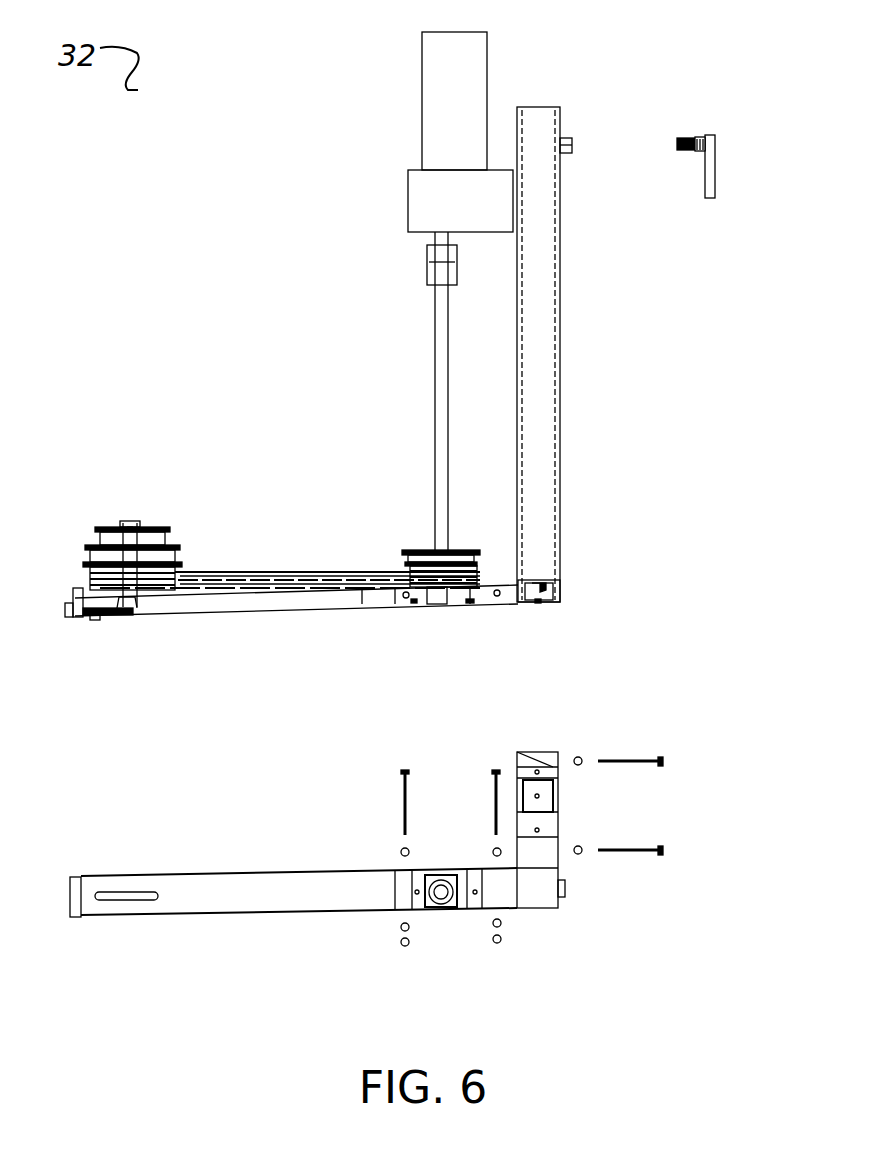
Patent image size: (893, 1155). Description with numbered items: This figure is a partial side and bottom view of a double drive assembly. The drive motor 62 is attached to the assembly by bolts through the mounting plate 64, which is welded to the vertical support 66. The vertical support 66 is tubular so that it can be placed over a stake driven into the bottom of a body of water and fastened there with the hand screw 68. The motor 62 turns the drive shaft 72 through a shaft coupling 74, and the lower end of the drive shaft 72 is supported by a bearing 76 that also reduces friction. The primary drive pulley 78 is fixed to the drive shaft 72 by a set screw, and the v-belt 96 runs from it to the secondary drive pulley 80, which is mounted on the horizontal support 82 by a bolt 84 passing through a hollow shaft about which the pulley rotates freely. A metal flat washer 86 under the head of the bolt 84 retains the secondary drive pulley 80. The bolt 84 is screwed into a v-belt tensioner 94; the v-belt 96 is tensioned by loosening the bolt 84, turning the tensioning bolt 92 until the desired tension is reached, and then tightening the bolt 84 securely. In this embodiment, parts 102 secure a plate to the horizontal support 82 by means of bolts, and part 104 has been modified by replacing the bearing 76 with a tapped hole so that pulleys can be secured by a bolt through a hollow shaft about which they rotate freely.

The drive motor 62 is at (422, 113).
The mounting plate 64 is at (517, 197).
The vertical support 66 is at (540, 450).
The hand screw 68 is at (717, 143).
The drive shaft 72 is at (440, 423).
The shaft coupling 74 is at (430, 272).
The bearing 76 is at (430, 605).
The primary drive pulley 78 is at (420, 555).
The secondary drive pulley 80 is at (85, 560).
The horizontal support 82 is at (205, 606).
The bolt 84 is at (138, 527).
The metal flat washer 86 is at (125, 527).
The tensioning bolt 92 is at (95, 612).
The v-belt tensioner 94 is at (138, 603).
The v-belt 96 is at (280, 571).
The parts 102 is at (413, 600).
The part 104 is at (540, 590).